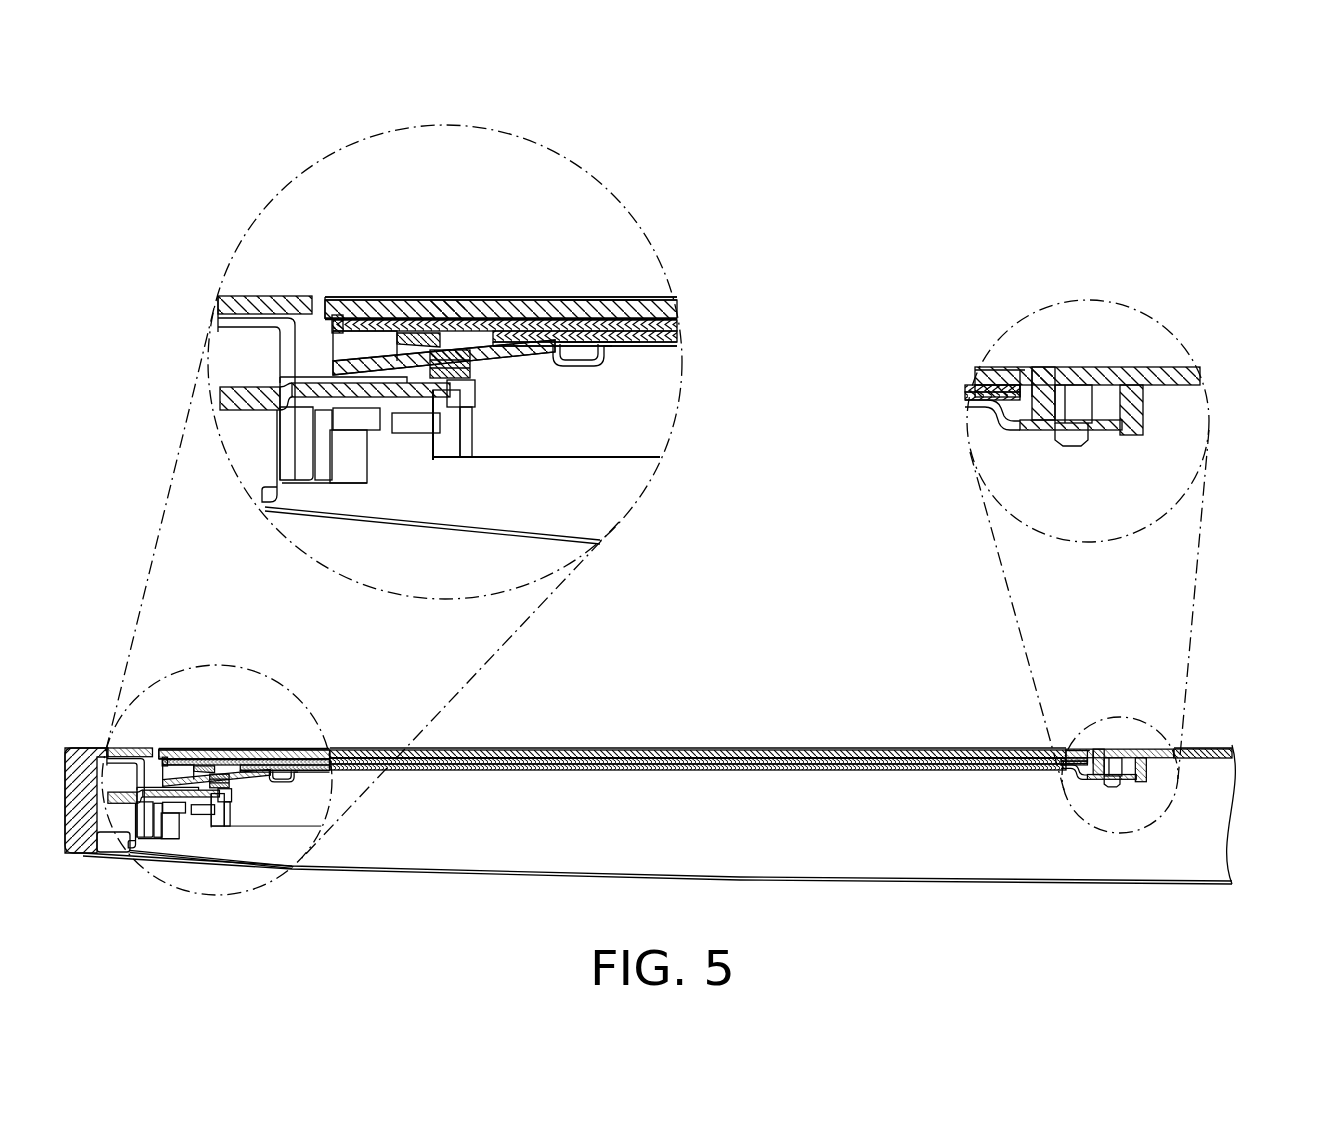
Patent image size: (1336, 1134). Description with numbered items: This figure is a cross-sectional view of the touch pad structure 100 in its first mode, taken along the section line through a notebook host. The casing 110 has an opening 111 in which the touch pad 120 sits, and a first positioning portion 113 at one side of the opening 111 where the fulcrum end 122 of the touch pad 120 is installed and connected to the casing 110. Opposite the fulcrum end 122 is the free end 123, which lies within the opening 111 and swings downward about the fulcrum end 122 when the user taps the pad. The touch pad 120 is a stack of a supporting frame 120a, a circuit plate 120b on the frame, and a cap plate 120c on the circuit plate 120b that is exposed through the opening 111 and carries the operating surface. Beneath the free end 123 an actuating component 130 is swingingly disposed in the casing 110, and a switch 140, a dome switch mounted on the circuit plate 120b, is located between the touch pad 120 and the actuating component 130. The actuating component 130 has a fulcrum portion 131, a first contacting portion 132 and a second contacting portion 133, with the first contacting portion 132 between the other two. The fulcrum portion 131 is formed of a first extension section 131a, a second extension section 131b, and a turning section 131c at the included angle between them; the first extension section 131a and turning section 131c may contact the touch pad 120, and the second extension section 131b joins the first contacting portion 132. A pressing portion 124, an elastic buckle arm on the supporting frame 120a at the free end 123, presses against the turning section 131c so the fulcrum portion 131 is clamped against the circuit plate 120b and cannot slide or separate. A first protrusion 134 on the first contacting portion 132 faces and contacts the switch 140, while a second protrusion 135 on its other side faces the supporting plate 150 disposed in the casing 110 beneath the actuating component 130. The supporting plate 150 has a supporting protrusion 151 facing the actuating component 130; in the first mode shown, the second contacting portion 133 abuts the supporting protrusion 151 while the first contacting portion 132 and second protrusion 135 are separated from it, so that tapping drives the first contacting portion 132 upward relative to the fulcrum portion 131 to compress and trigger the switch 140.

The touch pad structure 100 is at (1335, 911).
The casing 110 is at (228, 307).
The opening 111 is at (1027, 397).
The first positioning portion 113 is at (1163, 428).
The touch pad 120 is at (958, 70).
The supporting frame 120a is at (672, 345).
The circuit plate 120b is at (672, 321).
The cap plate 120c is at (596, 312).
The fulcrum end 122 is at (1098, 423).
The free end 123 is at (335, 297).
The pressing portion 124 is at (602, 362).
The actuating component 130 is at (1113, 70).
The fulcrum portion 131 is at (860, 182).
The first extension section 131a is at (600, 340).
The second extension section 131b is at (490, 360).
The turning section 131c is at (560, 330).
The first contacting portion 132 is at (543, 352).
The second contacting portion 133 is at (365, 350).
The first protrusion 134 is at (470, 298).
The second protrusion 135 is at (455, 362).
The switch 140 is at (448, 298).
The supporting plate 150 is at (313, 390).
The supporting protrusion 151 is at (300, 372).